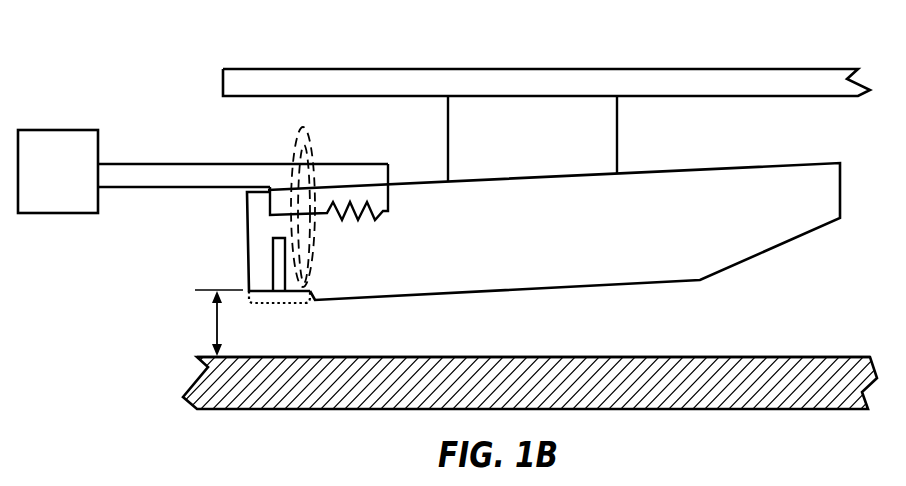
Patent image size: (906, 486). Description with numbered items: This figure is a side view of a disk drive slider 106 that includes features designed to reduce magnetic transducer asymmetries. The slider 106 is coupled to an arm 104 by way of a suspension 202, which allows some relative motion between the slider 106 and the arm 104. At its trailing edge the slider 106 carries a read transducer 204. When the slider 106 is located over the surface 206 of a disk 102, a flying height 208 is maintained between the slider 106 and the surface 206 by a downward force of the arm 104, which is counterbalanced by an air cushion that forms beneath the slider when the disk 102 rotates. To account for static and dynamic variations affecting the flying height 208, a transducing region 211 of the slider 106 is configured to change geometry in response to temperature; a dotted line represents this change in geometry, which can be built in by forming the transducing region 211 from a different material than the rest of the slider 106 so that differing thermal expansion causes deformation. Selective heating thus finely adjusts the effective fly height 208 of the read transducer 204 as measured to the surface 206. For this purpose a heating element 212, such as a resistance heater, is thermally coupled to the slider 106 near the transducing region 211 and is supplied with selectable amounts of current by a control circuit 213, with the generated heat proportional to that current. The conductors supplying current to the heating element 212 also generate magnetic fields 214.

The disk 102 is at (717, 397).
The arm 104 is at (790, 75).
The slider 106 is at (740, 172).
The suspension 202 is at (620, 128).
The read transducer 204 is at (273, 275).
The surface 206 is at (745, 357).
The flying height 208 is at (203, 323).
The transducing region 211 is at (303, 322).
The heating element 212 is at (372, 203).
The control circuit 213 is at (58, 137).
The magnetic fields 214 is at (312, 150).